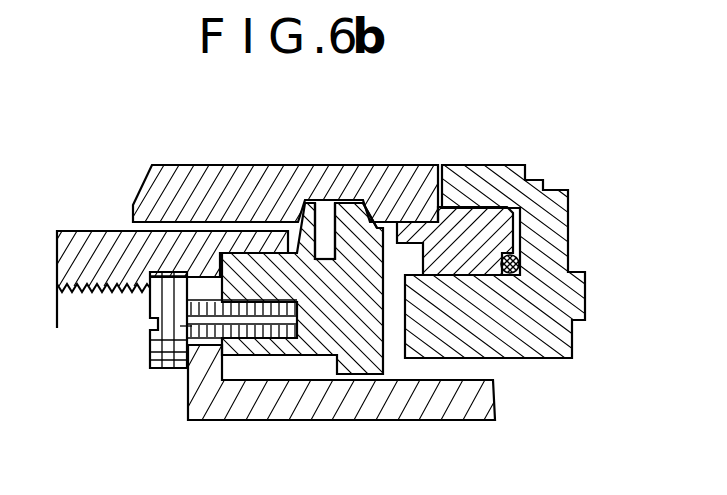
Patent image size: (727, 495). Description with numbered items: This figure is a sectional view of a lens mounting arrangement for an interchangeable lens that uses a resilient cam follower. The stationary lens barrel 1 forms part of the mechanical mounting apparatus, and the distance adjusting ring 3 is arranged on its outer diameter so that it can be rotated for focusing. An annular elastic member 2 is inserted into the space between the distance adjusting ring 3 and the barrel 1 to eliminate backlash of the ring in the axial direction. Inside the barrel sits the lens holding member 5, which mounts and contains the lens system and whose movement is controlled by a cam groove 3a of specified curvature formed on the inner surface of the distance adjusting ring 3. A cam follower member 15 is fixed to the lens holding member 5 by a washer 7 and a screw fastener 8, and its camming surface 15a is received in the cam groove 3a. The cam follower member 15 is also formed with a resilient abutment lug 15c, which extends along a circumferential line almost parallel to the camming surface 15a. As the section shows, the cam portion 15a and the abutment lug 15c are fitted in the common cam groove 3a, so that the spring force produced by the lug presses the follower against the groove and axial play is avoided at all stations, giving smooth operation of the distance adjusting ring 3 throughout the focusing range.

The lens barrel 1 is at (489, 165).
The annular elastic member 2 is at (520, 264).
The distance adjusting ring 3 is at (210, 172).
The cam groove 3a is at (327, 218).
The lens holding member 5 is at (405, 412).
The washer 7 is at (167, 403).
The screw fastener 8 is at (128, 367).
The cam follower member 15 is at (313, 348).
The camming surface 15a is at (361, 204).
The resilient abutment lug 15c is at (303, 205).